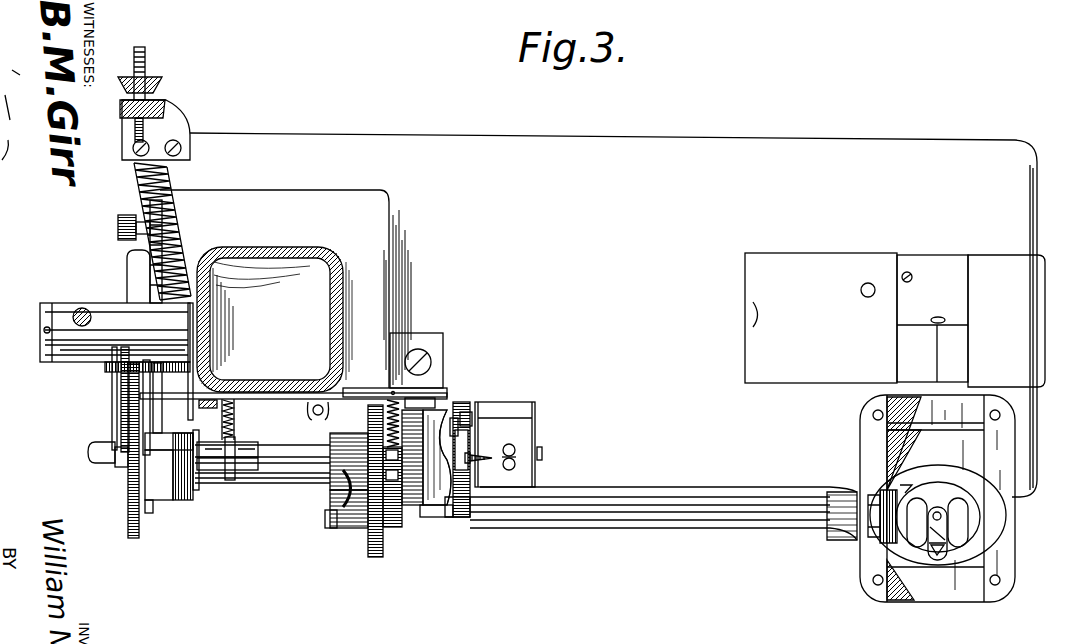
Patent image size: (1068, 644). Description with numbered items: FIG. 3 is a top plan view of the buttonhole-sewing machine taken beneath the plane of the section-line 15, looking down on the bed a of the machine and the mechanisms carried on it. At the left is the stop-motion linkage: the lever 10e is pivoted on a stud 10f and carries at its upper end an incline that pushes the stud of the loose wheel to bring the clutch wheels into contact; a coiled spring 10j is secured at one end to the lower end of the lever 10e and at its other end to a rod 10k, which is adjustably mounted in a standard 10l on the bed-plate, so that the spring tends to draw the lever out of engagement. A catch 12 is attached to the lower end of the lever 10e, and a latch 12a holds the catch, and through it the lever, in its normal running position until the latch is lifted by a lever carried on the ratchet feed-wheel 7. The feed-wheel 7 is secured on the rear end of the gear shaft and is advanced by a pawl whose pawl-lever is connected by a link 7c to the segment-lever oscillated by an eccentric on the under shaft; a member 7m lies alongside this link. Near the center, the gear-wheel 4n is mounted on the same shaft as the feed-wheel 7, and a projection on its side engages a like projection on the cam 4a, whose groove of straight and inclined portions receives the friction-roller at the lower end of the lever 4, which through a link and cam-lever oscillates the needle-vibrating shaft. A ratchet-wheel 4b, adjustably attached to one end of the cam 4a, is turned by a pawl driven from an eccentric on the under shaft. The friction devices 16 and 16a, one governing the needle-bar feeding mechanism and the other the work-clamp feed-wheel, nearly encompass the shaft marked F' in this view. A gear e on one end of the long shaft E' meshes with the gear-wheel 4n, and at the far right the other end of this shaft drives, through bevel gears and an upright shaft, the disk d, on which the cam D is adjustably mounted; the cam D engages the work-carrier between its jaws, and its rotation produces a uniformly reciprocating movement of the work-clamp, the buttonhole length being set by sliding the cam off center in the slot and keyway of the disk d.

The bed a is at (602, 315).
The standard 10l is at (168, 118).
The coiled spring 10j is at (170, 216).
The lever 10e is at (82, 309).
The rod 10k is at (138, 251).
The stud 10f is at (44, 330).
The bar 7m is at (120, 388).
The link 7c is at (111, 410).
The catch 12 is at (140, 420).
The section-line 15 is at (73, 504).
The ratchet feed-wheel 7 is at (136, 536).
The latch 12a is at (265, 395).
The feed part F' is at (250, 423).
The gear-wheel 4n is at (384, 420).
The friction device 16a is at (232, 470).
The friction device 16 is at (394, 498).
The gear e is at (373, 493).
The ratchet-wheel 4b is at (466, 520).
The cam 4a is at (415, 457).
The lever 4 is at (452, 400).
The shaft E' is at (651, 525).
The cam D is at (937, 498).
The disk d is at (935, 484).